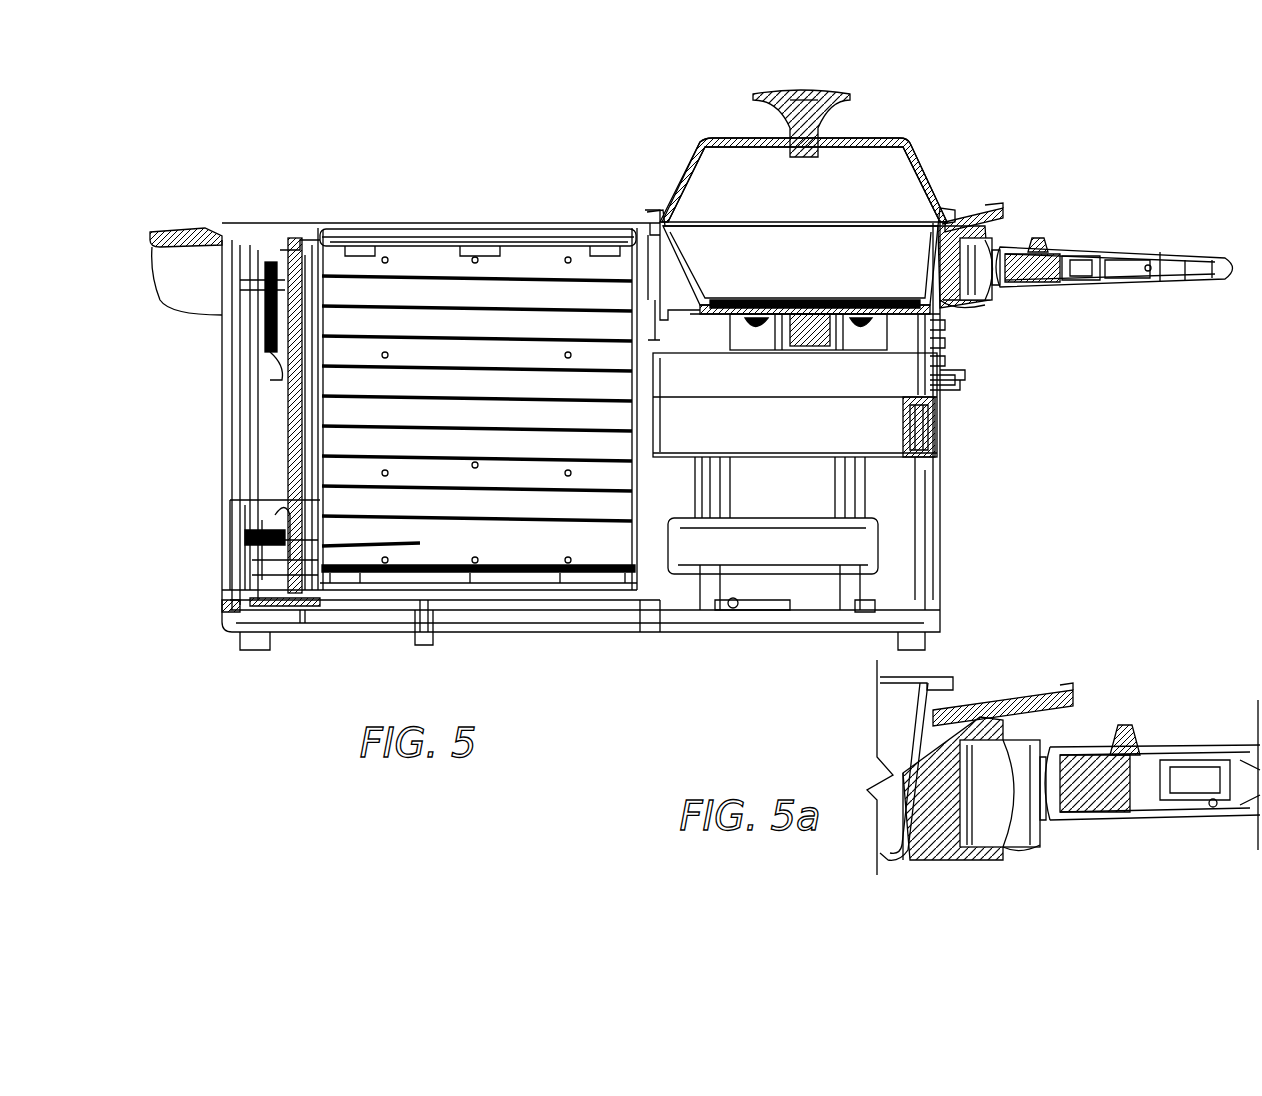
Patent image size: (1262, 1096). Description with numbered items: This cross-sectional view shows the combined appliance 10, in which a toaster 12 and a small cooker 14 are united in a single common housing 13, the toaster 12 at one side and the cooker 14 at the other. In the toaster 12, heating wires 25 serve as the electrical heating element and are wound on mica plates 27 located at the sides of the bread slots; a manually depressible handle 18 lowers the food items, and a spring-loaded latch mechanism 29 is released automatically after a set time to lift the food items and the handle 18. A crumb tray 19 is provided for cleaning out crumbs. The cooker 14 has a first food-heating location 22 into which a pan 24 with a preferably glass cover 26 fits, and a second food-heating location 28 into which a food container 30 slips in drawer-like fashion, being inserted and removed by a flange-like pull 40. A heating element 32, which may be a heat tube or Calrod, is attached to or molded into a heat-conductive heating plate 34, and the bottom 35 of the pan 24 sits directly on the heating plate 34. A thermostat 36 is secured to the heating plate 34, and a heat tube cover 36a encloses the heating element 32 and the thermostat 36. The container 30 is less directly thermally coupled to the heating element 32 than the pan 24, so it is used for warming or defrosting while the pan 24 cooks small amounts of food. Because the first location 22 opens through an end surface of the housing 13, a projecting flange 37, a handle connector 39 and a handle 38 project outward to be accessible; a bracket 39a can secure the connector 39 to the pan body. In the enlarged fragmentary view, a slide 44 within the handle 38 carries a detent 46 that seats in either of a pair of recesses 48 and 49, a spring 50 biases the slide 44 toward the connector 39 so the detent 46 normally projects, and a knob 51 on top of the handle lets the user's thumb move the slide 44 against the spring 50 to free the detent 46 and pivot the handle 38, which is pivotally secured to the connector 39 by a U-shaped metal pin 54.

In FIG. 5, the appliance 10 is at (578, 175).
In FIG. 5, the toaster 12 is at (318, 208).
In FIG. 5, the common housing 13 is at (942, 582).
In FIG. 5, the cooker 14 is at (805, 189).
In FIG. 5, the handle 18 is at (182, 228).
In FIG. 5, the crumb tray 19 is at (222, 597).
In FIG. 5, the first food-heating location 22 is at (723, 262).
In FIG. 5, the pan 24 is at (737, 157).
In FIG. 5, the heating wires 25 is at (565, 265).
In FIG. 5, the cover 26 is at (700, 212).
In FIG. 5, the mica plates 27 is at (521, 265).
In FIG. 5, the second food-heating location 28 is at (813, 440).
In FIG. 5, the spring-loaded latch mechanism 29 is at (262, 360).
In FIG. 5, the food container 30 is at (708, 422).
In FIG. 5, the heating element 32 is at (813, 332).
In FIG. 5, the heating plate 34 is at (820, 300).
In FIG. 5, the bottom 35 is at (733, 303).
In FIG. 5, the thermostat 36 is at (900, 458).
In FIG. 5, the heat tube cover 36a is at (757, 327).
In FIG. 5, the projecting flange 37 is at (1010, 217).
In FIG. 5A, the projecting flange 37 is at (1063, 690).
In FIG. 5, the handle 38 is at (1114, 258).
In FIG. 5A, the handle 38 is at (1152, 759).
In FIG. 5, the handle connector 39 is at (962, 303).
In FIG. 5A, the handle connector 39 is at (927, 840).
In FIG. 5A, the bracket 39a is at (948, 725).
In FIG. 5, the flange-like pull 40 is at (963, 372).
In FIG. 5, the slide 44 is at (1043, 250).
In FIG. 5A, the slide 44 is at (1150, 750).
In FIG. 5, the detent 46 is at (970, 278).
In FIG. 5A, the detent 46 is at (972, 732).
In FIG. 5, the recess 48 is at (992, 280).
In FIG. 5A, the recess 48 is at (1030, 742).
In FIG. 5, the recess 49 is at (983, 302).
In FIG. 5A, the recess 49 is at (1010, 850).
In FIG. 5, the spring 50 is at (1040, 284).
In FIG. 5A, the spring 50 is at (1113, 817).
In FIG. 5, the knob 51 is at (1023, 240).
In FIG. 5A, the knob 51 is at (1123, 723).
In FIG. 5, the U-shaped metal pin 54 is at (1067, 287).